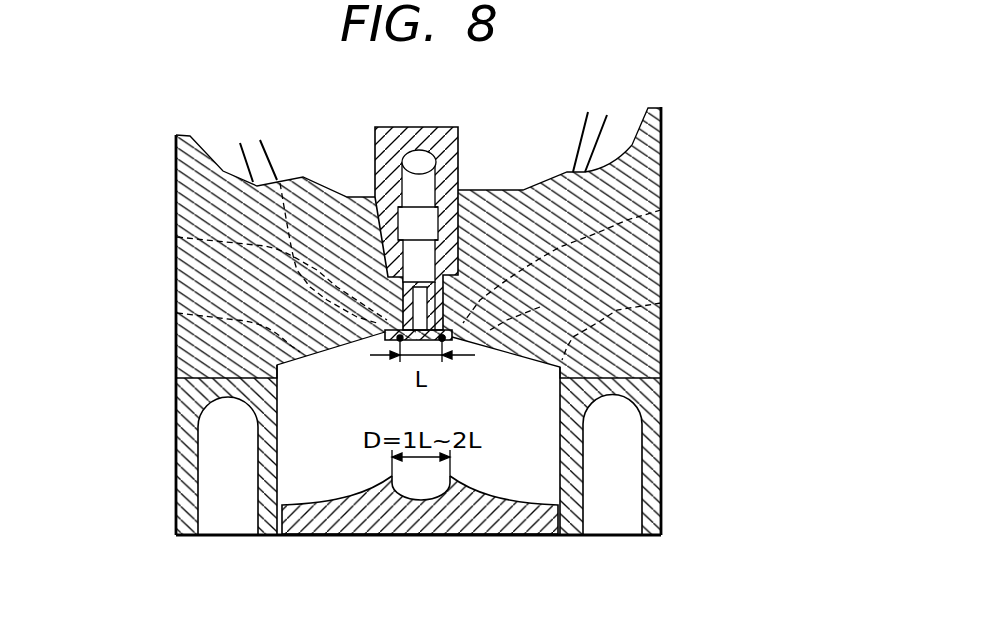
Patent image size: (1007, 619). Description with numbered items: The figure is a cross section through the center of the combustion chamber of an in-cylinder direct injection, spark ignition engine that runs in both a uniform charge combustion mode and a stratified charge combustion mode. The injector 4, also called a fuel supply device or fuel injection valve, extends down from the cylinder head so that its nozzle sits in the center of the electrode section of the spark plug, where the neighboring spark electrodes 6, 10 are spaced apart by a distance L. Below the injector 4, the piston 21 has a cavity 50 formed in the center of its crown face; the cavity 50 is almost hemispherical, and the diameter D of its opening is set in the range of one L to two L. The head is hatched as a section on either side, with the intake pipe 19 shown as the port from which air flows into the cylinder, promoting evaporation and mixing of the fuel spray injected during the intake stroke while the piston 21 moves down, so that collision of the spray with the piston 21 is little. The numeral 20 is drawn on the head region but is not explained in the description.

The injector 4 is at (413, 186).
The spark electrode 6 is at (445, 332).
The spark electrode 10 is at (447, 332).
The intake pipe 19 is at (640, 267).
The cylinder head 20 is at (198, 273).
The piston 21 is at (320, 502).
The cavity 50 is at (423, 500).